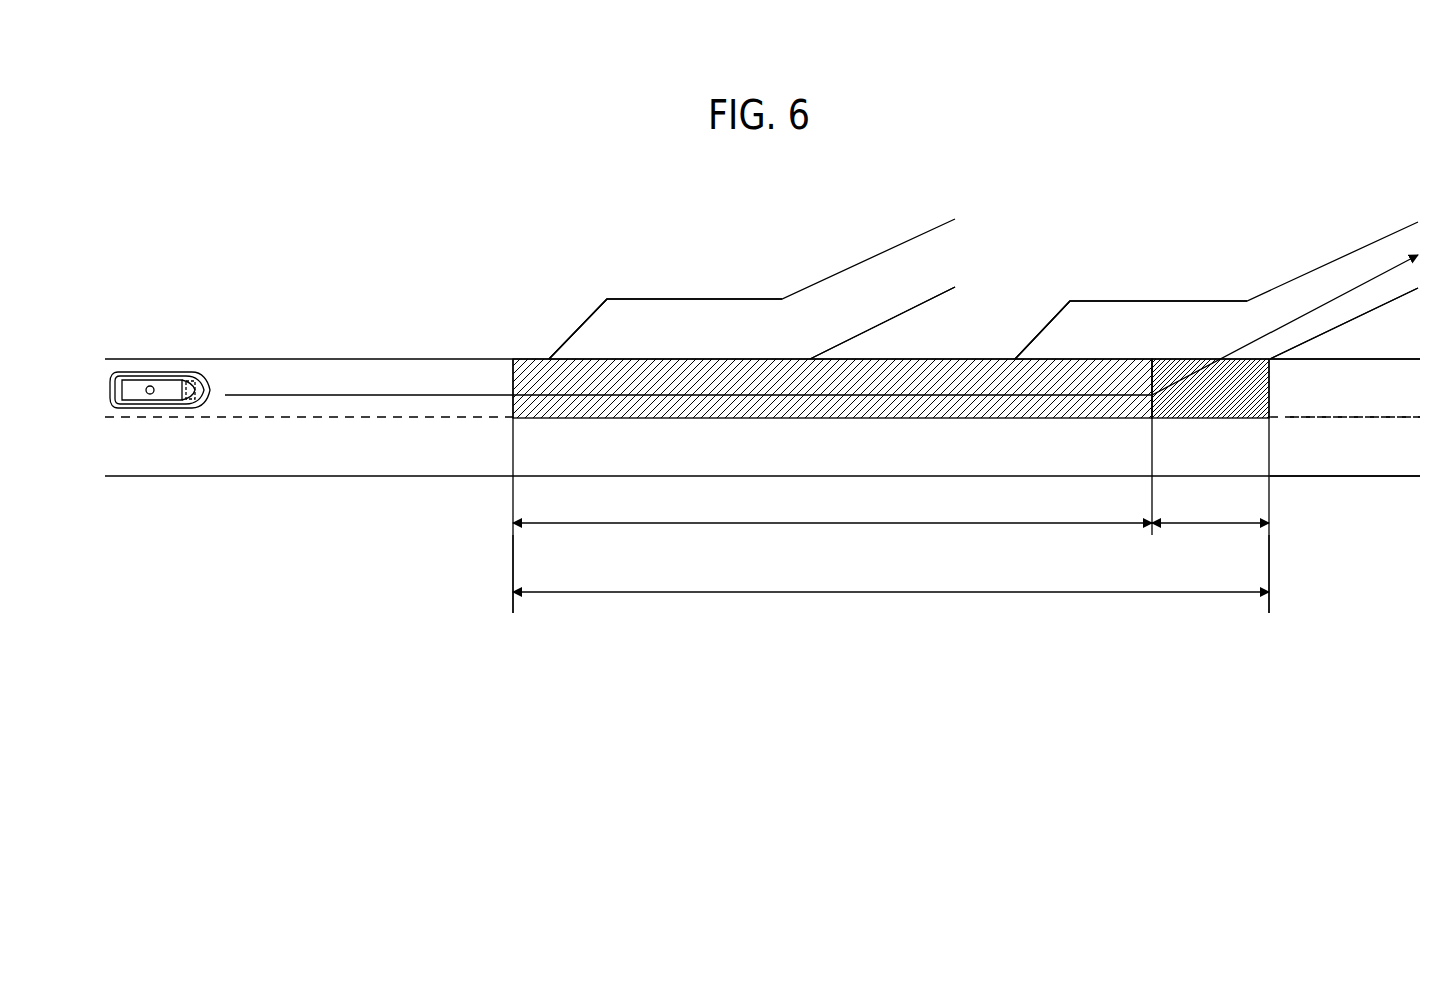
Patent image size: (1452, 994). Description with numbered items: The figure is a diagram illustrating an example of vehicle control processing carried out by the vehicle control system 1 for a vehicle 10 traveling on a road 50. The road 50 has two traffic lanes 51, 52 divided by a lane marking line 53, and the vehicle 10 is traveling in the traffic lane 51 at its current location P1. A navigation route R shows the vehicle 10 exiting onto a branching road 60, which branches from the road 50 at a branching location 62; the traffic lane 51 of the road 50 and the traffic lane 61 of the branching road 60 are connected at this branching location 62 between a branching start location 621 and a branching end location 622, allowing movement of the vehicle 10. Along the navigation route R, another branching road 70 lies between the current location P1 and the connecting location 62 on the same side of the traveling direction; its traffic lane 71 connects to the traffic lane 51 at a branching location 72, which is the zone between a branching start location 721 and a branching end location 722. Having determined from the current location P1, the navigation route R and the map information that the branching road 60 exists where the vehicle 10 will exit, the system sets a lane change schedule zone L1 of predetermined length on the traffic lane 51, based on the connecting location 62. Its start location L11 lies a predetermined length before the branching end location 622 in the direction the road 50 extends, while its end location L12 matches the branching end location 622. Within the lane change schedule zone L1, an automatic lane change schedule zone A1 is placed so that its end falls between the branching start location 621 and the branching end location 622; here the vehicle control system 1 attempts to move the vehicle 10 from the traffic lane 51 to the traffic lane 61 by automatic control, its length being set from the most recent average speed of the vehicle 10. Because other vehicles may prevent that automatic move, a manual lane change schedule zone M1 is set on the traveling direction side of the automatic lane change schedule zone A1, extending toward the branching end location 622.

The vehicle control system 1 is at (148, 348).
The vehicle 10 is at (150, 376).
The current location P1 is at (150, 386).
The road 50 is at (290, 352).
The traffic lane 51 is at (1333, 401).
The traffic lane 52 is at (1333, 461).
The lane marking line 53 is at (1375, 412).
The navigation route R is at (430, 392).
The branching road 70 is at (725, 271).
The traffic lane 71 is at (722, 338).
The branching location 72 is at (695, 296).
The branching start location 721 is at (549, 357).
The branching end location 722 is at (815, 356).
The branching road 60 is at (1211, 271).
The traffic lane 61 is at (1189, 338).
The branching location 62 is at (1162, 298).
The branching start location 621 is at (1015, 357).
The branching end location 622 is at (1275, 357).
The automatic lane change schedule zone A1 is at (830, 486).
The manual lane change schedule zone M1 is at (1209, 486).
The lane change schedule zone L1 is at (891, 609).
The start location L11 is at (507, 592).
The end location L12 is at (1266, 592).